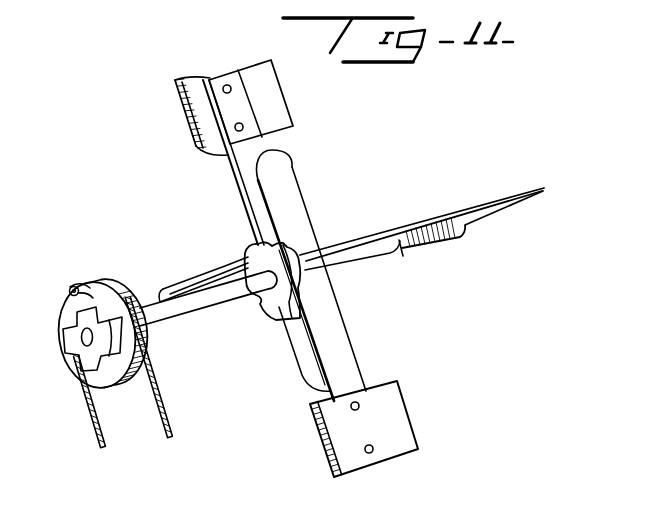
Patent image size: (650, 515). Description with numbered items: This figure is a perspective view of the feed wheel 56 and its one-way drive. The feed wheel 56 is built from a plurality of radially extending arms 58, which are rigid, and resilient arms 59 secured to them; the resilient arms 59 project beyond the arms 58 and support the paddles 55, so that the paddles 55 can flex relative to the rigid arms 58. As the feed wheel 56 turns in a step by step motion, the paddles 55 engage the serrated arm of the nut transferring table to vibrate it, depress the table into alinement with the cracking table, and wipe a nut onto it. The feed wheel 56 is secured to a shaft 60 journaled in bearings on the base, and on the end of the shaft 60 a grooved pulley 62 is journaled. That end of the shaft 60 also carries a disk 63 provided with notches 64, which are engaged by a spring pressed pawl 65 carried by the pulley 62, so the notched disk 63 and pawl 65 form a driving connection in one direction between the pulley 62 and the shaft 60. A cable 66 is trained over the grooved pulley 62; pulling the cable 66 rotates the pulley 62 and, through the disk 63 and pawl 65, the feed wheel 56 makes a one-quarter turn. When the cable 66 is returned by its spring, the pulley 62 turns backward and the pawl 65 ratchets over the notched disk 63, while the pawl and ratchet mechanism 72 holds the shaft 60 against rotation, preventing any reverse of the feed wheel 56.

The paddles 55 is at (502, 208).
The feed wheel 56 is at (354, 343).
The radially extending arms 58 is at (301, 346).
The resilient arms 59 is at (356, 372).
The shaft 60 is at (216, 304).
The grooved pulley 62 is at (121, 384).
The disk 63 is at (78, 353).
The notches 64 is at (83, 387).
The spring pressed pawl 65 is at (71, 287).
The cable 66 is at (175, 417).
The pawl and ratchet mechanism 72 is at (283, 241).